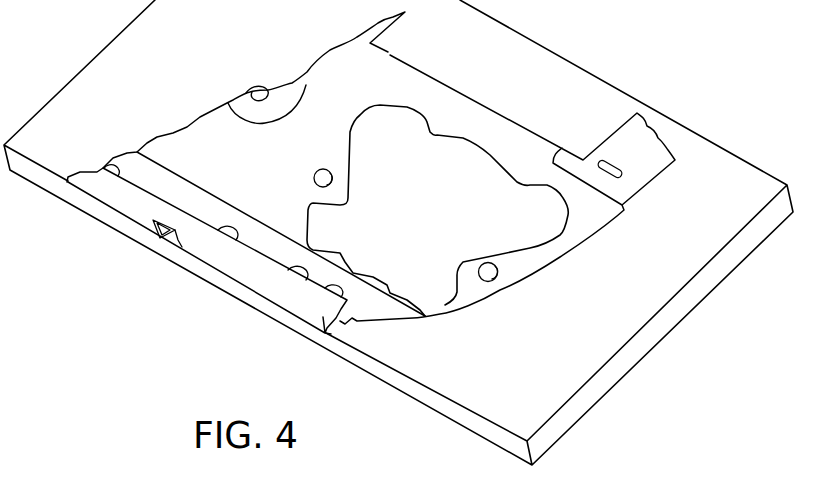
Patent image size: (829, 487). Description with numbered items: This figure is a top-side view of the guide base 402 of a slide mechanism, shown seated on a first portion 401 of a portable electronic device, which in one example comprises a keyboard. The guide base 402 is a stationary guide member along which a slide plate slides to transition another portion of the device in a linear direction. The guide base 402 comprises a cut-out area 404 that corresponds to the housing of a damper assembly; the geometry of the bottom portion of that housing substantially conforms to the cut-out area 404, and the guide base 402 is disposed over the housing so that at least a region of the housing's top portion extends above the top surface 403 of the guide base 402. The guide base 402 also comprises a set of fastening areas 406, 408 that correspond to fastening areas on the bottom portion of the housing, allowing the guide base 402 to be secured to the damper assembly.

The first portion of the portable electronic device 401 is at (756, 184).
The guide base 402 is at (141, 220).
The top surface of the guide base 403 is at (345, 91).
The cut-out area 404 is at (436, 264).
The fastening area 406 is at (497, 277).
The fastening area 408 is at (311, 178).